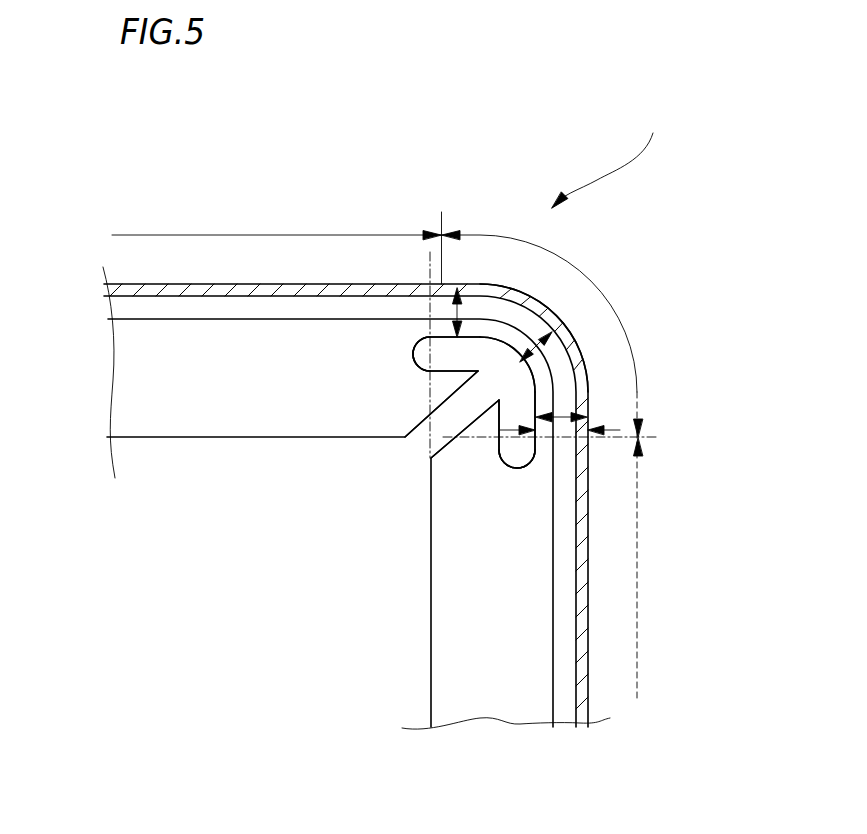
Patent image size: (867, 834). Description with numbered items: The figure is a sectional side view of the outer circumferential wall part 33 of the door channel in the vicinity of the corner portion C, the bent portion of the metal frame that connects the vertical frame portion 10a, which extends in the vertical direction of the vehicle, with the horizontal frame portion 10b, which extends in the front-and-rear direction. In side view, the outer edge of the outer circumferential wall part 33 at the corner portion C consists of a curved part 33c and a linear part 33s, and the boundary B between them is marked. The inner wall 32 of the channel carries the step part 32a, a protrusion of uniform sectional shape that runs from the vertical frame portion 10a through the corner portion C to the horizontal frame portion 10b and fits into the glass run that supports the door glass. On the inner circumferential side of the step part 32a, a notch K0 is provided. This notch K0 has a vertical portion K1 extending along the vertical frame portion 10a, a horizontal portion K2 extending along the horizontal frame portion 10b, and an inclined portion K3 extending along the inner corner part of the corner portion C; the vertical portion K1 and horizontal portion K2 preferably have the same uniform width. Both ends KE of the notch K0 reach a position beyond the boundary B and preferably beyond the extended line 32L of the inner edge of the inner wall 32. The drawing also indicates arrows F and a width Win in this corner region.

The outer circumferential wall part 33 is at (588, 497).
The curved part 33c is at (590, 284).
The linear part 33s is at (212, 235).
The inner wall 32 is at (157, 417).
The step part 32a is at (140, 300).
The extended line of the inner edge of the inner wall 32L is at (430, 268).
The horizontal frame portion 10b is at (132, 382).
The vertical frame portion 10a is at (502, 683).
The notch K0 is at (503, 382).
The vertical portion K1 is at (515, 450).
The horizontal portion K2 is at (420, 367).
The inclined portion K3 is at (448, 418).
The both ends of the notch KE is at (413, 360).
The force direction F is at (455, 308).
The boundary B is at (549, 317).
The inner width Win is at (620, 430).
The corner portion C is at (607, 155).